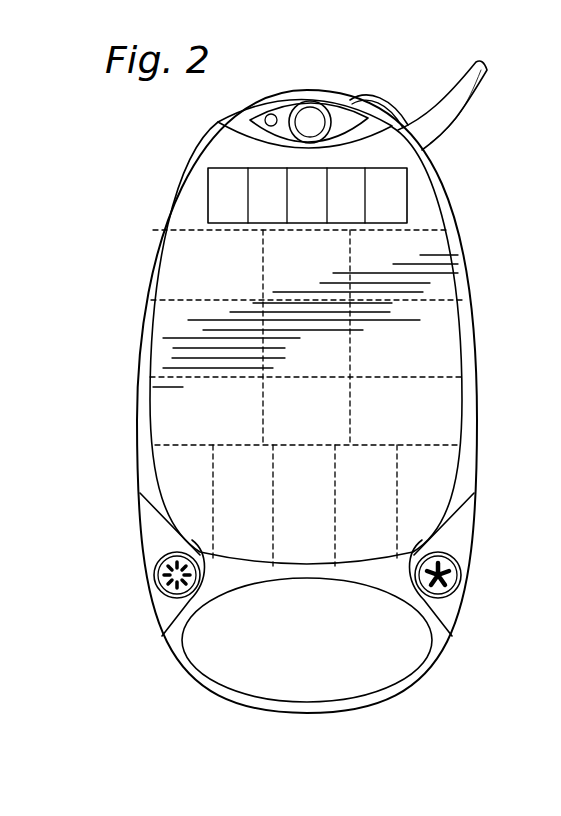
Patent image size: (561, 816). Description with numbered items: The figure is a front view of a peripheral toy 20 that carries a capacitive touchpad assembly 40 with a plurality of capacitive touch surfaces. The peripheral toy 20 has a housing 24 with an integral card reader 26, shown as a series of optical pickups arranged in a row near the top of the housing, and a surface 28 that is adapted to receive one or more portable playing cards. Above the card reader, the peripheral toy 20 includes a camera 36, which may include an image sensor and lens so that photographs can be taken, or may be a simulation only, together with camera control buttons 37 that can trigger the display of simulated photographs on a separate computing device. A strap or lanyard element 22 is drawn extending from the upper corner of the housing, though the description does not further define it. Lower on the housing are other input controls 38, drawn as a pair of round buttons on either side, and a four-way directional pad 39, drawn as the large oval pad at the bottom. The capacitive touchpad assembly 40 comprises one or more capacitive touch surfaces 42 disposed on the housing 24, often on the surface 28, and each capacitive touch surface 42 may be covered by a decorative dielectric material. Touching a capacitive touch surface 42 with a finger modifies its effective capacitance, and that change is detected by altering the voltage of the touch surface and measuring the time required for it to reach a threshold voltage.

The peripheral toy 20 is at (185, 705).
The lanyard strap 22 is at (481, 80).
The housing 24 is at (480, 432).
The integral card reader 26 is at (407, 206).
The surface 28 is at (179, 412).
The camera 36 is at (311, 111).
The camera control buttons 37 is at (385, 103).
The input controls 38 is at (160, 580).
The four-way directional pad 39 is at (325, 677).
The capacitive touchpad assembly 40 is at (131, 284).
The capacitive touch surface 42 is at (255, 338).